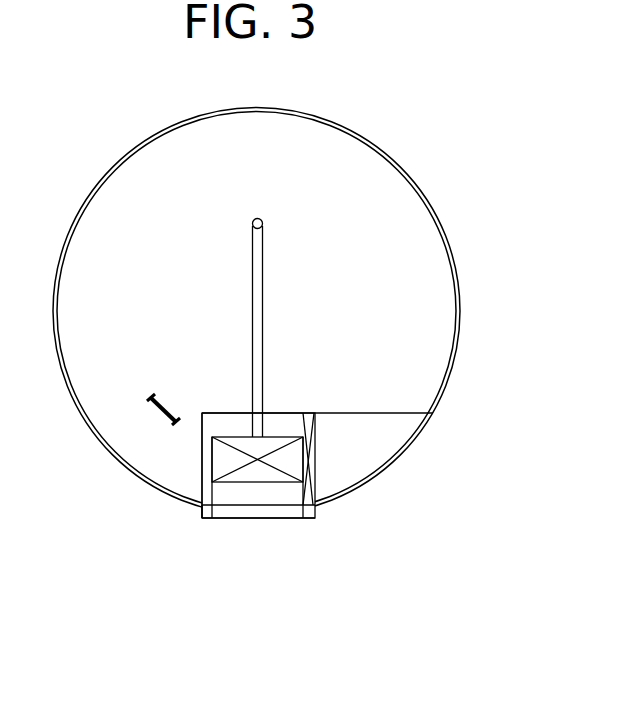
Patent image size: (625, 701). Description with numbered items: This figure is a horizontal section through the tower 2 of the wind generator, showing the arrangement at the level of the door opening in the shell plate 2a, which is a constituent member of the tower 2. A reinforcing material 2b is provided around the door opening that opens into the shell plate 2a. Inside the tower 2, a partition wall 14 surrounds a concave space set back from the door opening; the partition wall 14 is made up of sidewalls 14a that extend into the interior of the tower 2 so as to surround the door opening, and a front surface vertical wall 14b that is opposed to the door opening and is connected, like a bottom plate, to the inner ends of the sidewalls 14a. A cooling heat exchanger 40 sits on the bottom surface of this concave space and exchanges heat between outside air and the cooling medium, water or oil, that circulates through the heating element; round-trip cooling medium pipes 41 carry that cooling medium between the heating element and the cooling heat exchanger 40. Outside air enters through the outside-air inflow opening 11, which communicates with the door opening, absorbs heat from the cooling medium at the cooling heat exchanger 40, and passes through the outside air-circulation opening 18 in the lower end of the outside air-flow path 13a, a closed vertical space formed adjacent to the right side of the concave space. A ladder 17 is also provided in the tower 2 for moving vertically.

The tower 2 is at (287, 296).
The shell plate 2a is at (455, 238).
The reinforcing material 2b is at (203, 514).
The outside-air inflow opening 11 is at (268, 519).
The outside air-flow path 13a is at (383, 440).
The partition wall 14 is at (243, 457).
The sidewalls 14a is at (200, 473).
The front surface vertical wall 14b is at (337, 413).
The ladder 17 is at (163, 403).
The outside air-circulation opening 18 is at (312, 460).
The cooling heat exchanger 40 is at (212, 455).
The round-trip cooling medium pipes 41 is at (264, 270).